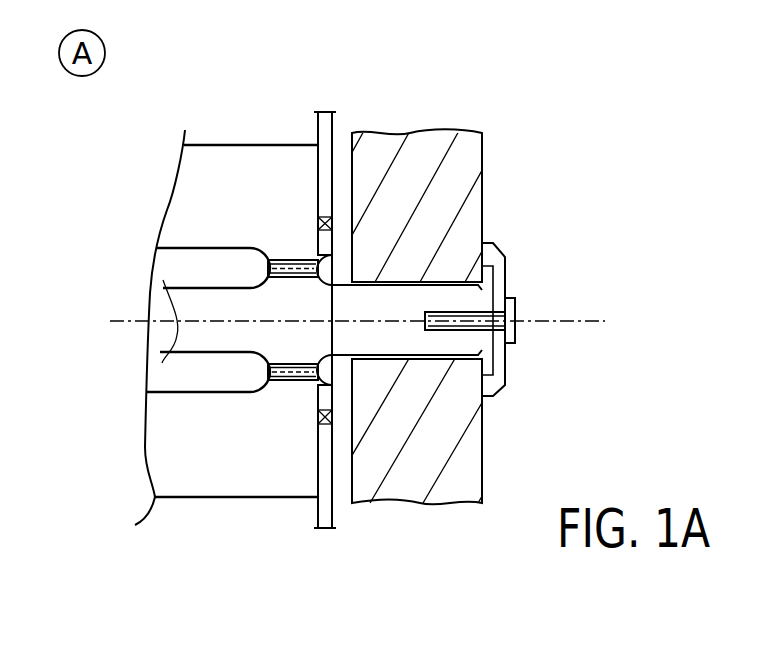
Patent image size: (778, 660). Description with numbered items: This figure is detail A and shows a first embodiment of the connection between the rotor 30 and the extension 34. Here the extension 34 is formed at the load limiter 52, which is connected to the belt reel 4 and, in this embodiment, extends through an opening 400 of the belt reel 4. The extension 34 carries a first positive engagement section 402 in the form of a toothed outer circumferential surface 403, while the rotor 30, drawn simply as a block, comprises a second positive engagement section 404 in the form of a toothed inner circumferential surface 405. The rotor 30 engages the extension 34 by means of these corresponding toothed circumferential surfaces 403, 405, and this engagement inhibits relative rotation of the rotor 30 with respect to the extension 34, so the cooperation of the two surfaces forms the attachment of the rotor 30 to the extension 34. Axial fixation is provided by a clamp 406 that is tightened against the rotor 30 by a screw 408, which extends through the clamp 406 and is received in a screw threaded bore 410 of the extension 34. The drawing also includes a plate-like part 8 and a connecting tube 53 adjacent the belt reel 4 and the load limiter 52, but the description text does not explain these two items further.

The belt reel 4 is at (224, 466).
The wall plate 8 is at (334, 155).
The rotor 30 is at (490, 199).
The extension 34 is at (425, 337).
The load limiter 52 is at (177, 345).
The tube 53 is at (285, 383).
The opening 400 is at (307, 294).
The first positive engagement section 402 is at (435, 371).
The toothed outer circumferential surface 403 is at (415, 360).
The second positive engagement section 404 is at (466, 202).
The toothed inner circumferential surface 405 is at (417, 268).
The clamp 406 is at (507, 282).
The screw 408 is at (516, 301).
The screw threaded bore 410 is at (500, 337).